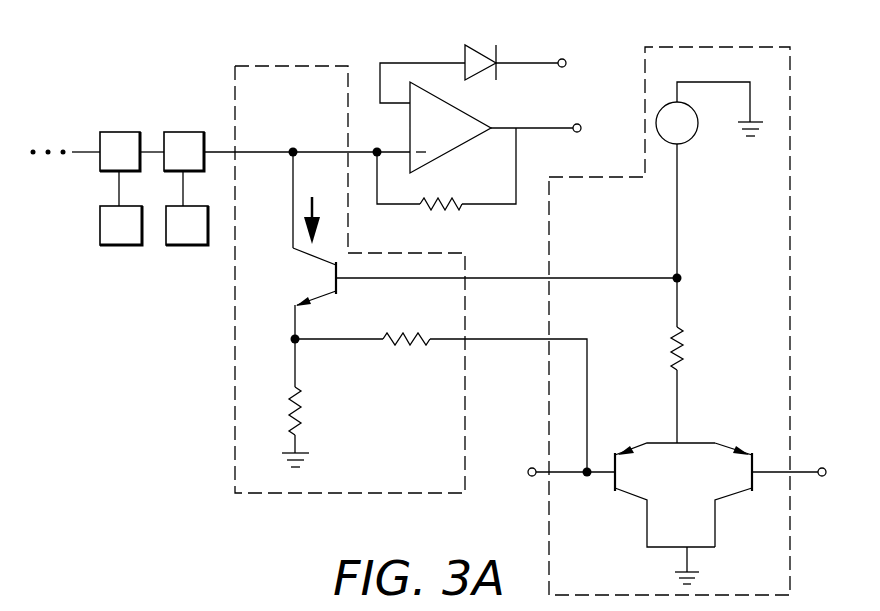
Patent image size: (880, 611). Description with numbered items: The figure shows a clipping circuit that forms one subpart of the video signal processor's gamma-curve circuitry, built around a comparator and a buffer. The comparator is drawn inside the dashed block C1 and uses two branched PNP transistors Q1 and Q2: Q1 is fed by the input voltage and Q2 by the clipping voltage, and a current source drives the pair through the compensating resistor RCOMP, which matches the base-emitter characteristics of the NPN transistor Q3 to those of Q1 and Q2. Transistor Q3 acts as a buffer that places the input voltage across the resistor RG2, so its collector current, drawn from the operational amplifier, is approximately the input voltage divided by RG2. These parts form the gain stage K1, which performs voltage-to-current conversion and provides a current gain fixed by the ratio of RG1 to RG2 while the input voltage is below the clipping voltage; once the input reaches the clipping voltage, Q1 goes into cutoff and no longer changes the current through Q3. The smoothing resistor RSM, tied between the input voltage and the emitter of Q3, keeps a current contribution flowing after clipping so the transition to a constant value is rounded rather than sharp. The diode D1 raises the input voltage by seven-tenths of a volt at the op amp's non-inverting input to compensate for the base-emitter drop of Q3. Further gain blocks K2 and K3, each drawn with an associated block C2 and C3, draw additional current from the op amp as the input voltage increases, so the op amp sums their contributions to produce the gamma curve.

The gain block K1 is at (456, 255).
The gain block K2 is at (184, 152).
The gain block K3 is at (120, 152).
The first compensation circuit (differential pair) C1 is at (672, 321).
The second compensation circuit C2 is at (187, 209).
The third compensation circuit C3 is at (121, 209).
The PNP transistor Q1 is at (665, 495).
The PNP transistor Q2 is at (782, 495).
The NPN transistor Q3 is at (478, 245).
The diode D1 is at (531, 49).
The gain resistor RG1 is at (446, 186).
The gain resistor RG2 is at (313, 403).
The smoothing resistor RSM is at (441, 402).
The compensating resistor RCOMP is at (710, 360).